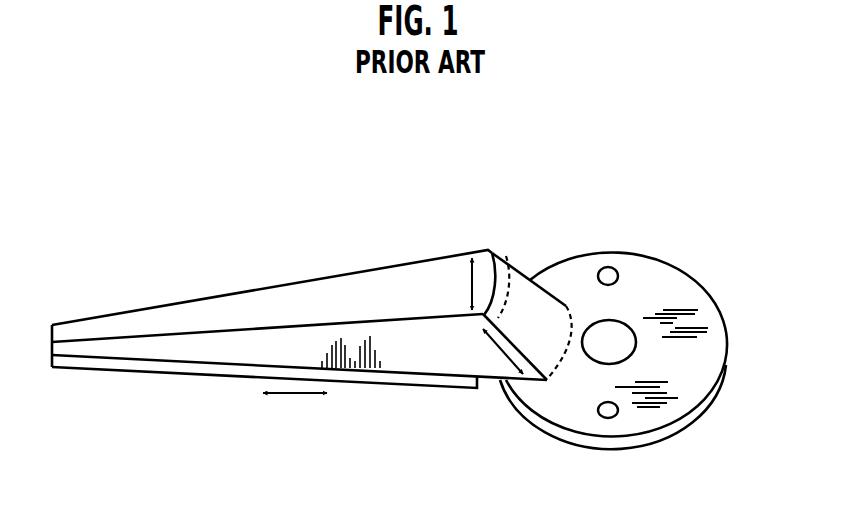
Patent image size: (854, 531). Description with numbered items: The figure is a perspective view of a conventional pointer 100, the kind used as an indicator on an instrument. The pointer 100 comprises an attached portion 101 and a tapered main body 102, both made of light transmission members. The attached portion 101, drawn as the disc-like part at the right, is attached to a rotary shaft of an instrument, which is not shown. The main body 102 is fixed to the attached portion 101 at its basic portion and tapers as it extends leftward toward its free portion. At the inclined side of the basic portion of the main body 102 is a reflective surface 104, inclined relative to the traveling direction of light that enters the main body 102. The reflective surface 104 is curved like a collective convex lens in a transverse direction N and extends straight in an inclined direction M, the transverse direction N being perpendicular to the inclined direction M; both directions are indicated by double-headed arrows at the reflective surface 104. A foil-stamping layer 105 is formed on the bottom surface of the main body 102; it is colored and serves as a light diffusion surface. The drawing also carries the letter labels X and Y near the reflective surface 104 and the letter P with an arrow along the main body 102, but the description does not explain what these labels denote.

The pointer 100 is at (115, 266).
The attached portion 101 is at (682, 383).
The main body 102 is at (227, 312).
The reflective surface 104 is at (538, 313).
The foil-stamping layer 105 is at (233, 376).
The head slider front face X is at (507, 258).
The head slider rear face Y is at (560, 353).
The transverse direction N is at (470, 280).
The inclined direction M is at (503, 348).
The longitudinal vibration direction P is at (295, 408).